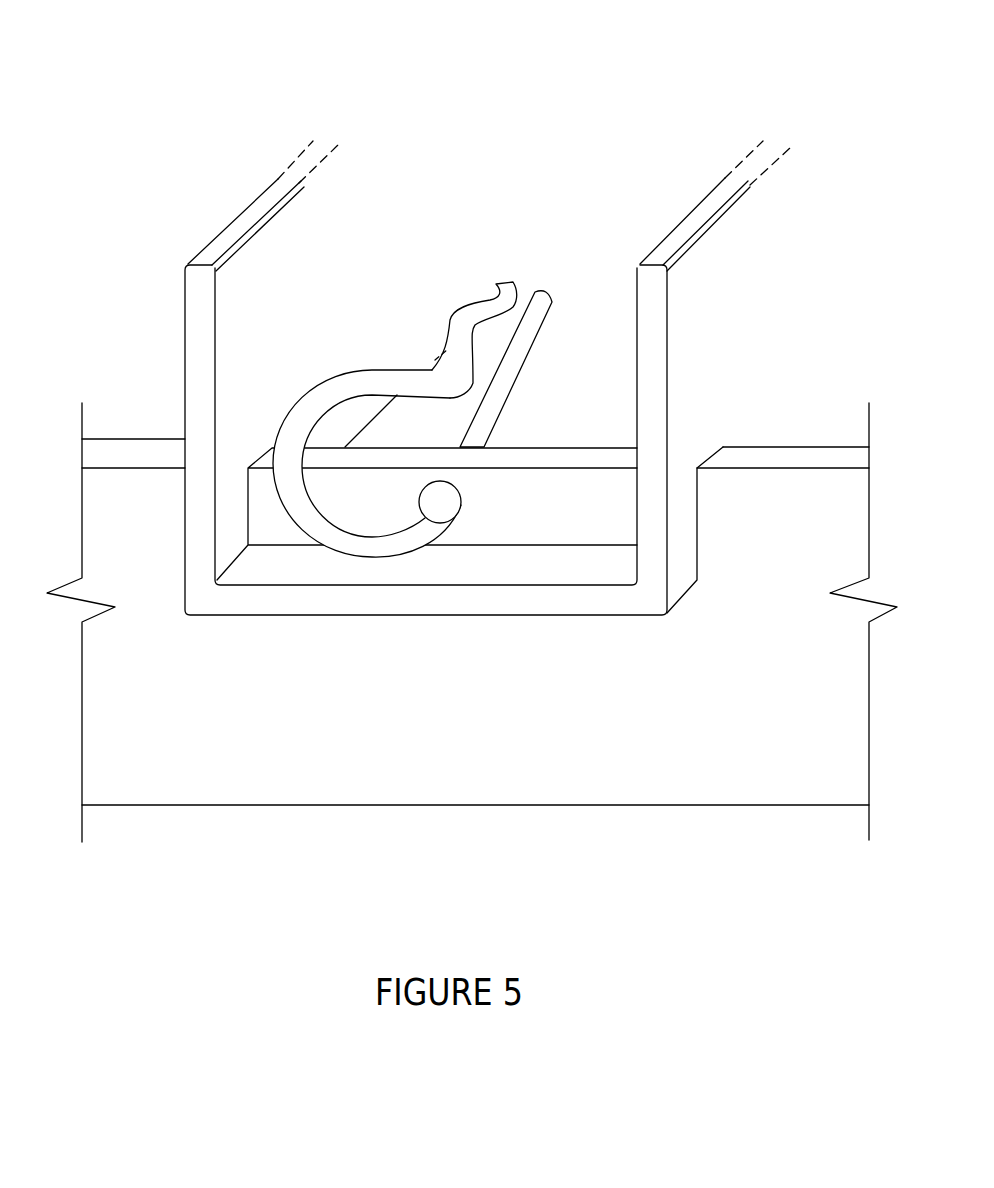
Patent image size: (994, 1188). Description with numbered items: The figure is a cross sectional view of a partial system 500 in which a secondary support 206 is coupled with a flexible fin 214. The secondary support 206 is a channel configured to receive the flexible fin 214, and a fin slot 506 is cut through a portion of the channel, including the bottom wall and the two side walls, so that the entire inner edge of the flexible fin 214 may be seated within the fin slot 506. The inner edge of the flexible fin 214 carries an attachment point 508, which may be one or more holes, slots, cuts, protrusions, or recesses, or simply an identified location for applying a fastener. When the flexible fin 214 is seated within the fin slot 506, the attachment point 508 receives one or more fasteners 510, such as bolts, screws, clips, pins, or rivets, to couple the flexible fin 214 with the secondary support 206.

The partial system 500 is at (553, 68).
The secondary support 206 is at (193, 317).
The flexible fin 214 is at (200, 772).
The fin slot 506 is at (731, 438).
The attachment point 508 is at (430, 500).
The fastener 510 is at (547, 298).